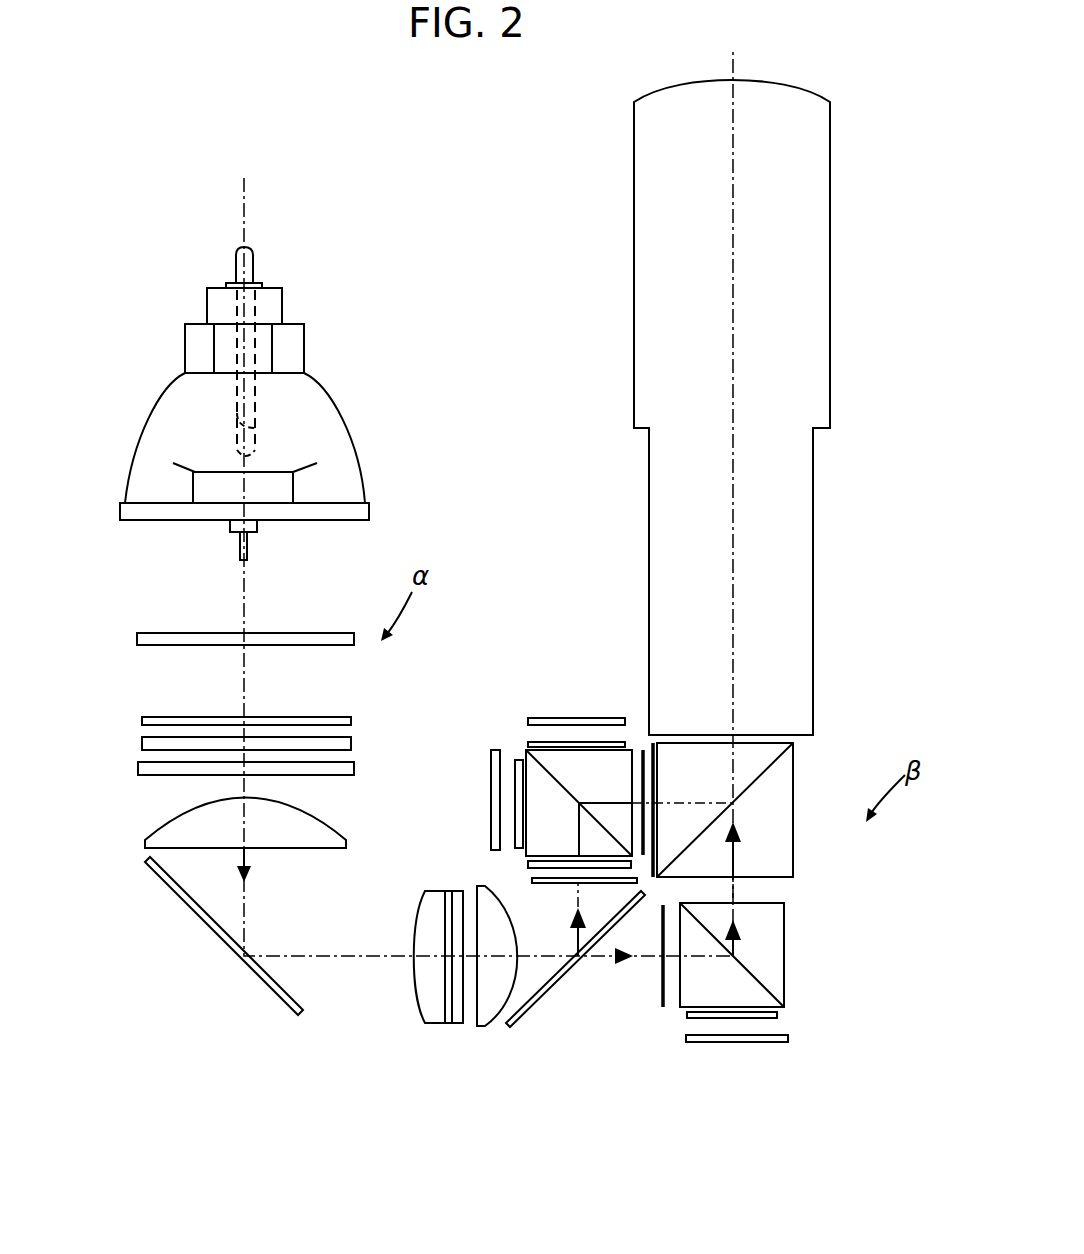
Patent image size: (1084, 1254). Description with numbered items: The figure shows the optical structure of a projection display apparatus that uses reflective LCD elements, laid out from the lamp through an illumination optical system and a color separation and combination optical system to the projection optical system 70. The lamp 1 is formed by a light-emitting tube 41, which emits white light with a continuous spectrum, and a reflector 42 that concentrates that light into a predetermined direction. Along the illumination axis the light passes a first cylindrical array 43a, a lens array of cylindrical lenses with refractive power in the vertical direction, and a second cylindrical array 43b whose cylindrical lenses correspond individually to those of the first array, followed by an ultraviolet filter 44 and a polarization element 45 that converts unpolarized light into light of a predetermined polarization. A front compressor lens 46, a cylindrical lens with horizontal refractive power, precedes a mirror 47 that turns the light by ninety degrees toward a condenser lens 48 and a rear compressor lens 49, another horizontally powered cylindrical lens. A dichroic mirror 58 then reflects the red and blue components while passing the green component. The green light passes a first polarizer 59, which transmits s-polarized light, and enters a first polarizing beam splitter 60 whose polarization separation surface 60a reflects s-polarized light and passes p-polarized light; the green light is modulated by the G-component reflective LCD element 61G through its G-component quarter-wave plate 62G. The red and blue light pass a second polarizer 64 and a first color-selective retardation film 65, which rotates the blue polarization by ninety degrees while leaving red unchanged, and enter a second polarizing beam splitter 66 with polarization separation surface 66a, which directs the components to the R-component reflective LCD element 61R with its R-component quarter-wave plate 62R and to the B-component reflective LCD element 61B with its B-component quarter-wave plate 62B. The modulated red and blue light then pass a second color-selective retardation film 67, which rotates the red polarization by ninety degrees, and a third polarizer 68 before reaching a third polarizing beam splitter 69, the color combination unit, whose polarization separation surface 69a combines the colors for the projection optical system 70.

The lamp 1 is at (343, 390).
The light-emitting tube 41 is at (237, 413).
The reflector 42 is at (357, 451).
The first cylindrical array 43a is at (137, 636).
The second cylindrical array 43b is at (142, 748).
The ultraviolet filter 44 is at (142, 718).
The polarization element 45 is at (137, 776).
The front compressor lens 46 is at (147, 840).
The mirror 47 is at (185, 922).
The condenser lens 48 is at (433, 1023).
The rear compressor lens 49 is at (482, 1026).
The dichroic mirror 58 is at (523, 1023).
The first polarizer 59 is at (660, 1008).
The first polarizing beam splitter 60 is at (786, 977).
The polarization separation surface 60a is at (747, 968).
The G-component reflective LCD element 61G is at (752, 1043).
The G-component quarter-wave plate 62G is at (780, 1015).
The R-component reflective LCD element 61R is at (492, 770).
The R-component quarter-wave plate 62R is at (517, 762).
The B-component reflective LCD element 61B is at (565, 718).
The B-component quarter-wave plate 62B is at (529, 745).
The second polarizer 64 is at (533, 881).
The first color-selective retardation film 65 is at (528, 865).
The second polarizing beam splitter 66 is at (527, 752).
The polarization separation surface 66a is at (552, 783).
The second color-selective retardation film 67 is at (643, 750).
The third polarizer 68 is at (653, 743).
The third polarizing beam splitter 69 is at (793, 773).
The polarization separation surface 69a is at (750, 787).
The projection optical system 70 is at (818, 125).